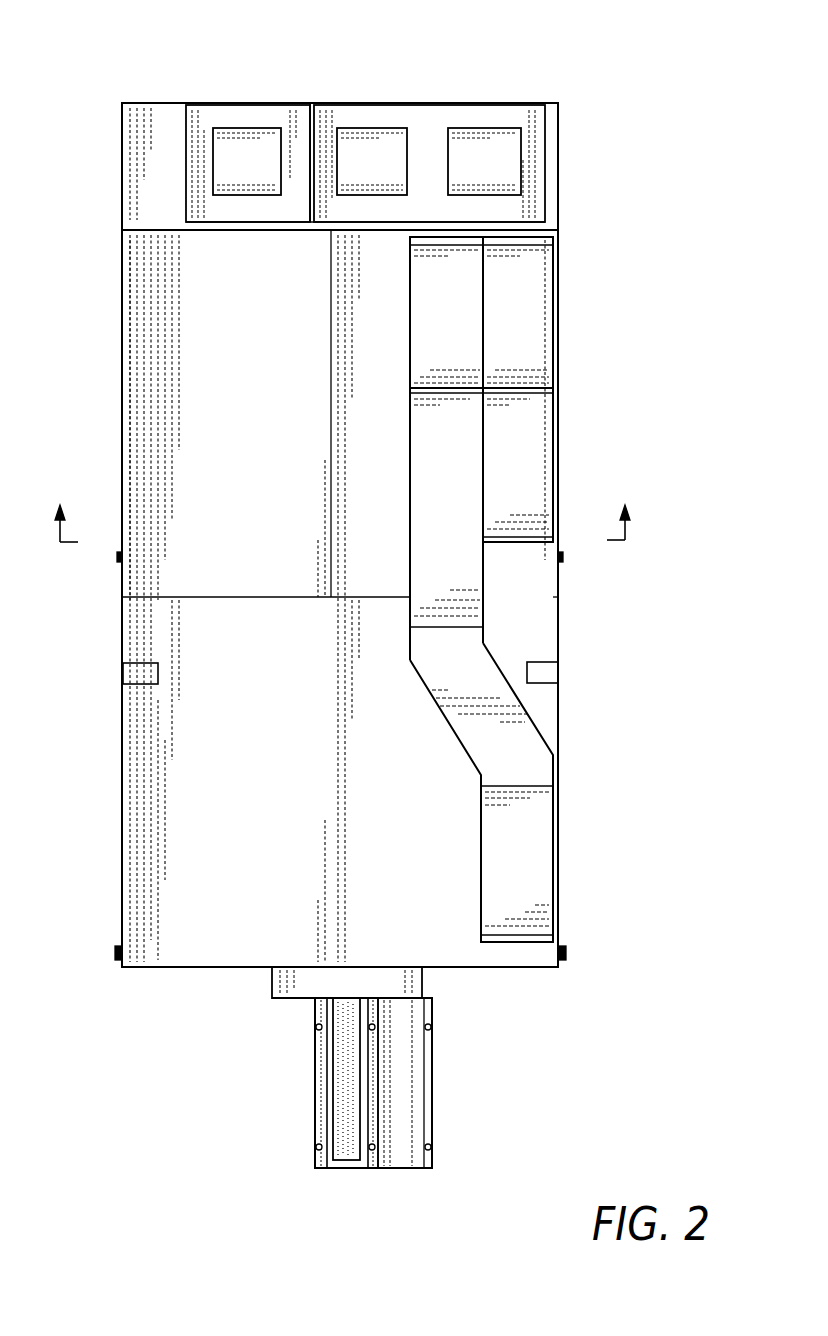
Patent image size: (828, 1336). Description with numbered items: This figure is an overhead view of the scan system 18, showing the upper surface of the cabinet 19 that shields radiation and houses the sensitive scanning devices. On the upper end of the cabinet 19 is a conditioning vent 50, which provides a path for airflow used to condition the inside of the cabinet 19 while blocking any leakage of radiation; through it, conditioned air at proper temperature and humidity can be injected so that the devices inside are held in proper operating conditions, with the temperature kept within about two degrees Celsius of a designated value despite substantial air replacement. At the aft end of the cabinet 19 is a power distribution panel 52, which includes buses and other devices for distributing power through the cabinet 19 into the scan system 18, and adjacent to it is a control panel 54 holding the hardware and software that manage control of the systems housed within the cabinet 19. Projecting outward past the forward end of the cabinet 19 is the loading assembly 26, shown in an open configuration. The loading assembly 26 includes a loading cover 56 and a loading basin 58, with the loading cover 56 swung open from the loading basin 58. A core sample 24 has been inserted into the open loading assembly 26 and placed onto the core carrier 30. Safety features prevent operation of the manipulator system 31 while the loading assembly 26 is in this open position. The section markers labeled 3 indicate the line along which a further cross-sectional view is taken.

The scan system 18 is at (636, 200).
The cabinet 19 is at (560, 400).
The conditioning vent 50 is at (515, 733).
The power distribution panel 52 is at (452, 81).
The control panel 54 is at (245, 81).
The loading assembly 26 is at (475, 1034).
The core carrier 30 is at (318, 1057).
The manipulator system 31 is at (245, 1110).
The loading cover 56 is at (447, 1083).
The loading basin 58 is at (316, 1133).
The core sample 24 is at (348, 1168).
The section line 3- 3 is at (343, 505).